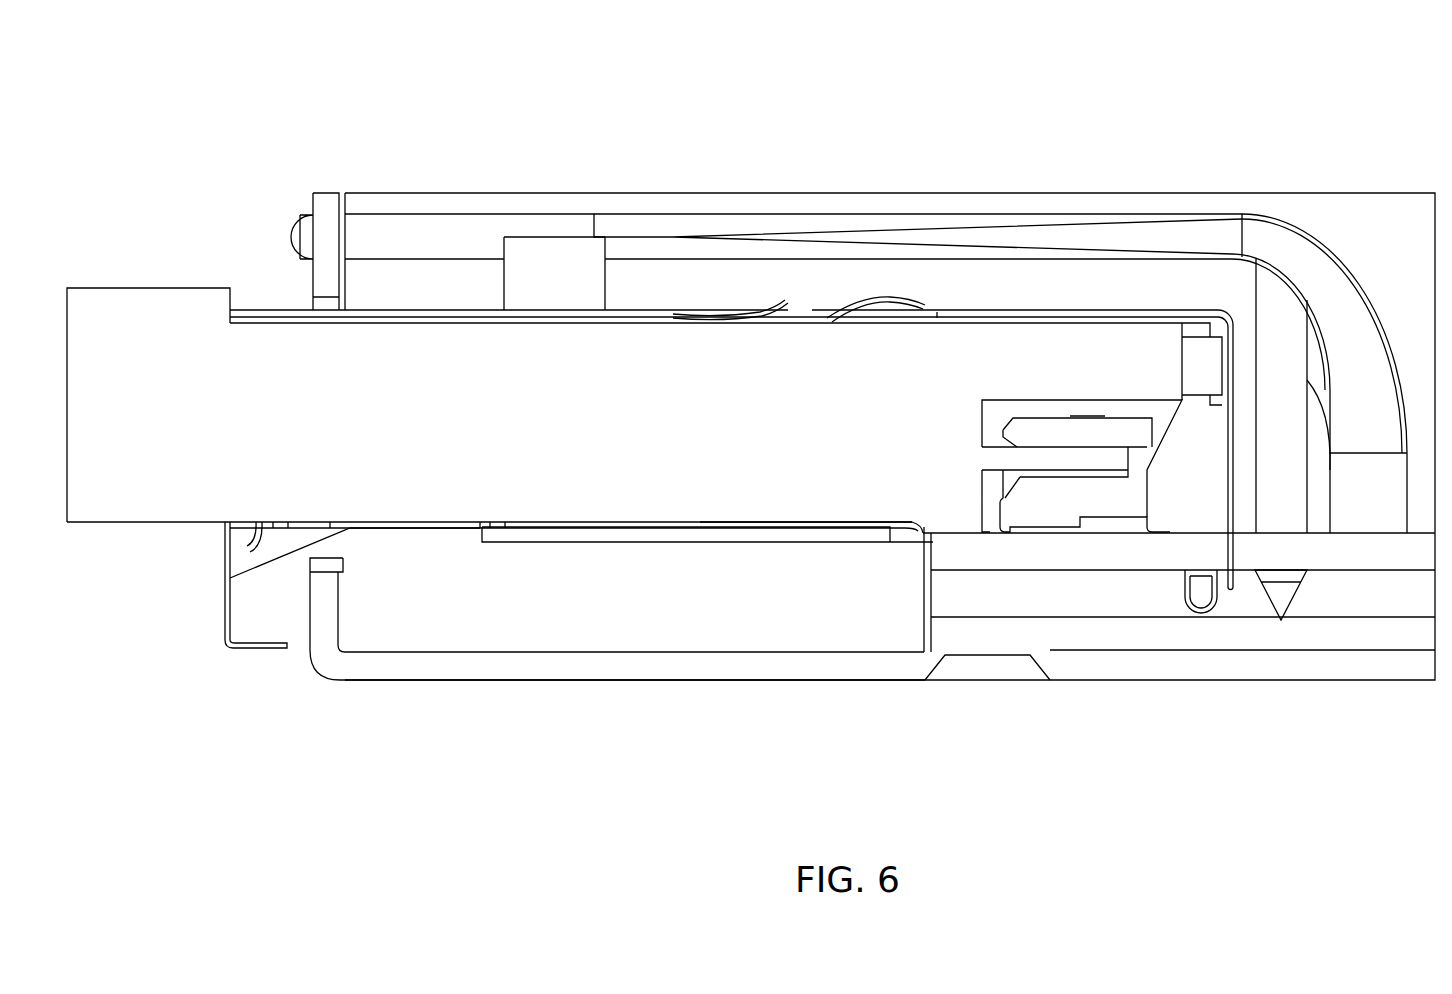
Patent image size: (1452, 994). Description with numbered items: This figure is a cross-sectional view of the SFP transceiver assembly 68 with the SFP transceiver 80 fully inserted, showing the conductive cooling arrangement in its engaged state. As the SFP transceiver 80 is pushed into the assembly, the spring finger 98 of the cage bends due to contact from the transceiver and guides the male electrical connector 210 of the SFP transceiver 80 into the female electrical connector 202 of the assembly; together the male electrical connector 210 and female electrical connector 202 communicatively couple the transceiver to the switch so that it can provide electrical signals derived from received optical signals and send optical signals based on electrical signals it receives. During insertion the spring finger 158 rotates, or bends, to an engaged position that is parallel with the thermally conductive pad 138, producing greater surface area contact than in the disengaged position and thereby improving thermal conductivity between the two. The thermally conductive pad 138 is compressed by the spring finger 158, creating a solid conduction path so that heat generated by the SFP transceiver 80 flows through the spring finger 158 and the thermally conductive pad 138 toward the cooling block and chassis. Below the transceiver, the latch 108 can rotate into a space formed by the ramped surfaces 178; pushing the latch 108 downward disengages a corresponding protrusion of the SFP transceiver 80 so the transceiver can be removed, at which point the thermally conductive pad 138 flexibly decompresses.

The SFP transceiver assembly 68 is at (1293, 114).
The SFP fiber optic transceiver 80 is at (170, 493).
The spring finger 98 is at (688, 315).
The latch 108 is at (245, 523).
The thermally conductive pad 138 is at (573, 530).
The spring finger 158 is at (820, 527).
The ramped surfaces 178 is at (277, 558).
The female electrical connector 202 is at (1058, 440).
The male electrical connector 210 is at (1073, 455).